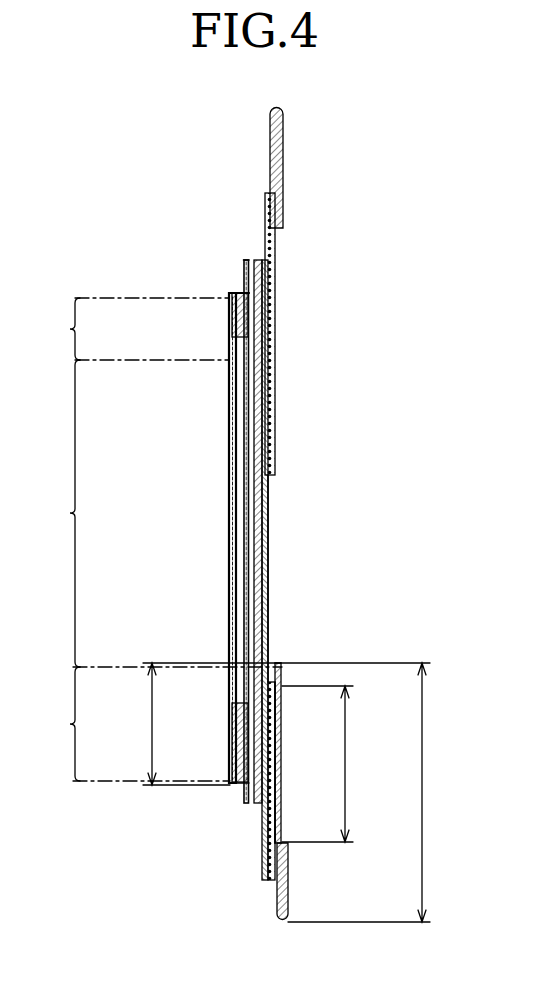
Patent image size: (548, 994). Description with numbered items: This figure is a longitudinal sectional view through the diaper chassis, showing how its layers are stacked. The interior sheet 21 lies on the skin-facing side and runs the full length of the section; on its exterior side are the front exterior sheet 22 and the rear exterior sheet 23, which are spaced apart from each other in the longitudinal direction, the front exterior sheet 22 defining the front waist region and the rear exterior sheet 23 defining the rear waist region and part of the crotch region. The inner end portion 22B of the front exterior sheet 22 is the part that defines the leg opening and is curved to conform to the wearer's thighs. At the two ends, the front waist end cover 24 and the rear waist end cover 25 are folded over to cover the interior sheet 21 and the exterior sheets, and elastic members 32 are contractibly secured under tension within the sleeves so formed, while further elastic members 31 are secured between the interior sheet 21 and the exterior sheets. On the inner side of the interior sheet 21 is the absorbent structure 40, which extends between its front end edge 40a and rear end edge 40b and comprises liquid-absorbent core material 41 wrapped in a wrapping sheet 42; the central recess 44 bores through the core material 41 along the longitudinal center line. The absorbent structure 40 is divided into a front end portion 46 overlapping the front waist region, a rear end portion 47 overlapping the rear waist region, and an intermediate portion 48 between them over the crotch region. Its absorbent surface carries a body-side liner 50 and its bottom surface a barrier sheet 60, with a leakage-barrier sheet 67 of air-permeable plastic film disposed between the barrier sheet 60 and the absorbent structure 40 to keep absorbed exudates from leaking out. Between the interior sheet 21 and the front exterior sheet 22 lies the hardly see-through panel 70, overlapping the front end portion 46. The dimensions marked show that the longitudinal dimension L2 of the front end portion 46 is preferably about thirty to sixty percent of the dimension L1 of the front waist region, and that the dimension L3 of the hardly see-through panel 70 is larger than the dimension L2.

The interior sheet 21 is at (269, 518).
The front exterior sheet 22 is at (282, 705).
The inner end portion of the front exterior sheet 22B is at (281, 666).
The rear exterior sheet 23 is at (275, 278).
The front waist end cover 24 is at (298, 863).
The rear waist end cover 25 is at (294, 130).
The elastic members 31 is at (267, 232).
The elastic members 32 is at (283, 149).
The absorbent structure 40 is at (222, 492).
The front end edge 40a is at (236, 788).
The rear end edge 40b is at (236, 294).
The liquid-absorbent core material 41 is at (236, 312).
The wrapping sheet 42 is at (245, 383).
The central recess 44 is at (243, 430).
The front end portion 46 is at (156, 724).
The rear end portion 47 is at (129, 329).
The intermediate portion 48 is at (55, 513).
The body-side liner 50 is at (233, 520).
The barrier sheet 60 is at (269, 555).
The leakage-barrier sheet 67 is at (245, 270).
The hardly see-through panel 70 is at (276, 793).
The dimension in the longitudinal direction of the front waist region L1 is at (423, 798).
The dimension in the longitudinal direction of the front end portion L2 is at (150, 718).
The dimension in the longitudinal direction of the hardly see-through panel L3 is at (347, 768).